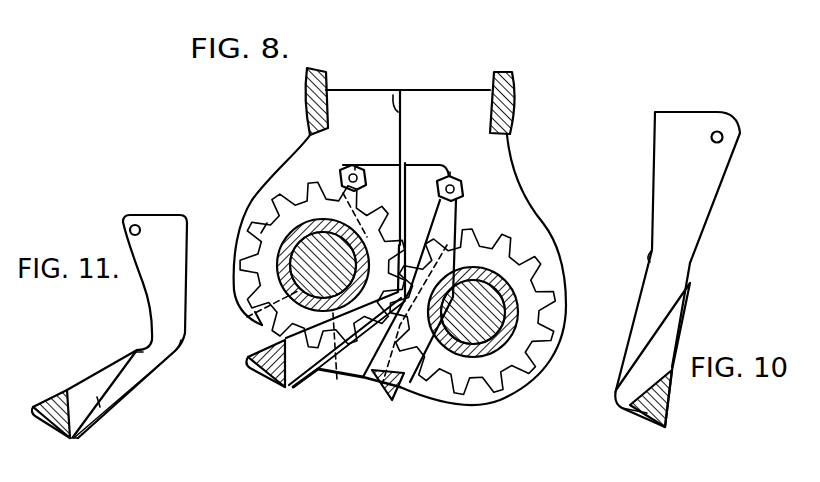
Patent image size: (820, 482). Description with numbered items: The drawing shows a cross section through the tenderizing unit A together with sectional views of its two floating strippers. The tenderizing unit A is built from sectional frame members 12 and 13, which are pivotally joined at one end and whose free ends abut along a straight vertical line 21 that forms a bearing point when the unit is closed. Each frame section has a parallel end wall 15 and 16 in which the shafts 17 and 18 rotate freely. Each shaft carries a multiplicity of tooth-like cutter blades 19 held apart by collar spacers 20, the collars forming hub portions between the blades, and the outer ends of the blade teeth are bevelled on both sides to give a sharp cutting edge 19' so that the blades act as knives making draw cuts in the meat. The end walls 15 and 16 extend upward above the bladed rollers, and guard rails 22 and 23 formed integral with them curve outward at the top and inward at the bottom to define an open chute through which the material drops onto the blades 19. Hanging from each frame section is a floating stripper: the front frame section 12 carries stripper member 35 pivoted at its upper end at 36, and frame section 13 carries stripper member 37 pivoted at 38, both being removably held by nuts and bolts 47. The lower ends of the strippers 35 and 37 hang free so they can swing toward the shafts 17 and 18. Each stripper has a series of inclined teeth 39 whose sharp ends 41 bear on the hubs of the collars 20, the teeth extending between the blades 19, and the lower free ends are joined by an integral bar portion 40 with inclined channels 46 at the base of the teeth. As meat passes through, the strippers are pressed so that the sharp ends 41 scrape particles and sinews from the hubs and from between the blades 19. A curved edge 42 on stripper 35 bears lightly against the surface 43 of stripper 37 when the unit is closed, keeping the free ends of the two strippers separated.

In FIG. 8, the front frame section 12 is at (302, 152).
In FIG. 8, the frame section 13 is at (505, 183).
In FIG. 8, the end wall 15 is at (355, 95).
In FIG. 8, the end wall 16 is at (463, 100).
In FIG. 8, the shaft 17 is at (300, 262).
In FIG. 8, the shaft 18 is at (400, 330).
In FIG. 8, the cutter blades 19 is at (386, 270).
In FIG. 8, the cutting edge 19' is at (376, 298).
In FIG. 8, the collar spacers 20 is at (258, 312).
In FIG. 8, the straight vertical line 21 is at (393, 95).
In FIG. 8, the guard rail 22 is at (313, 68).
In FIG. 8, the guard rail 23 is at (505, 78).
In FIG. 8, the stripper member 35 is at (289, 378).
In FIG. 11, the stripper member 35 is at (66, 391).
In FIG. 8, the pivot point 36 is at (345, 170).
In FIG. 8, the stripper member 37 is at (386, 394).
In FIG. 10, the stripper member 37 is at (647, 413).
In FIG. 8, the pivot point 38 is at (460, 181).
In FIG. 8, the inclined teeth 39 is at (349, 368).
In FIG. 10, the inclined teeth 39 is at (688, 300).
In FIG. 11, the inclined teeth 39 is at (100, 407).
In FIG. 8, the integral bar portion 40 is at (265, 368).
In FIG. 10, the integral bar portion 40 is at (658, 412).
In FIG. 11, the integral bar portion 40 is at (53, 422).
In FIG. 8, the sharp ends 41 is at (450, 252).
In FIG. 10, the sharp ends 41 is at (690, 277).
In FIG. 11, the sharp ends 41 is at (135, 352).
In FIG. 8, the curved edge 42 is at (398, 278).
In FIG. 11, the curved edge 42 is at (175, 358).
In FIG. 10, the surface 43 is at (647, 265).
In FIG. 10, the inclined channels 46 is at (615, 390).
In FIG. 11, the inclined channels 46 is at (73, 410).
In FIG. 8, the nuts and bolts 47 is at (358, 165).
In FIG. 8, the tenderizing unit A is at (427, 97).